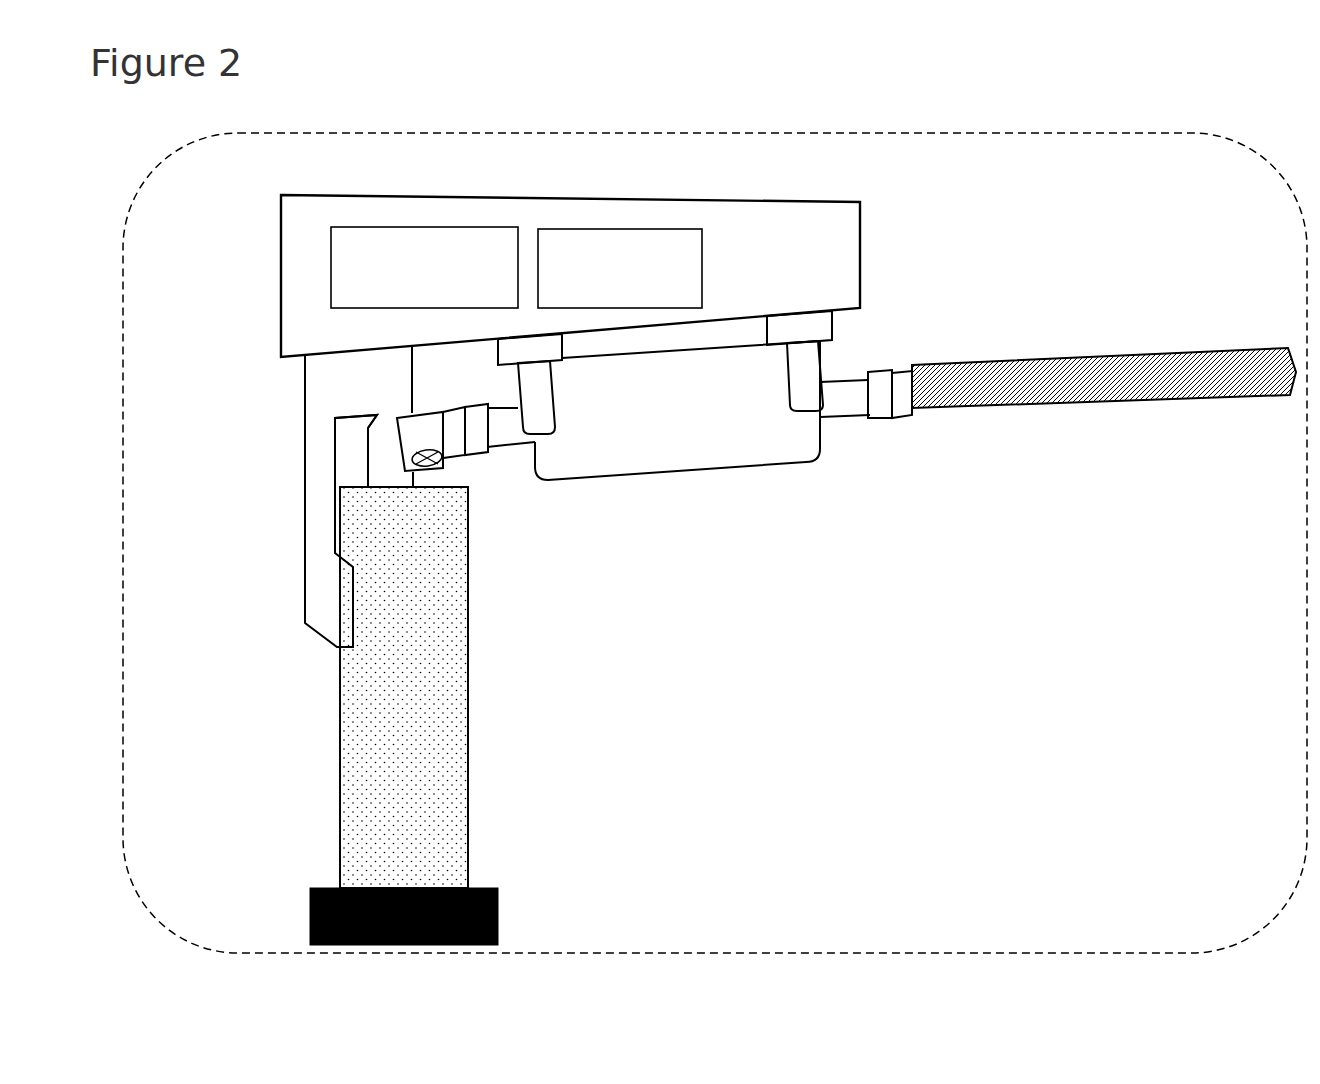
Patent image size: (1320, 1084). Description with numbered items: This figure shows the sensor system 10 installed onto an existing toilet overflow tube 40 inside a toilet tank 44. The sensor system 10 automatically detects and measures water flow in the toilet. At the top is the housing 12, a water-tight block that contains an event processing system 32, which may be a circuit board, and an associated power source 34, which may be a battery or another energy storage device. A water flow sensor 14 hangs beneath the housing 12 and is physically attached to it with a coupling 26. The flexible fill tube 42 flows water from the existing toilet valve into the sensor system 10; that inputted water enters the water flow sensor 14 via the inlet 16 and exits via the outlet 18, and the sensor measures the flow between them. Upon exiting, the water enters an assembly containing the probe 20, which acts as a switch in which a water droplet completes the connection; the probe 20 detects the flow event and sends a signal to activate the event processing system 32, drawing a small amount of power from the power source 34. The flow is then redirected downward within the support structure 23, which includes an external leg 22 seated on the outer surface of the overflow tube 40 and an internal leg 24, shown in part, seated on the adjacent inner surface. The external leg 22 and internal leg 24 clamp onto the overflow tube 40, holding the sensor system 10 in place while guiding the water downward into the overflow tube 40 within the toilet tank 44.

The sensor system 10 is at (988, 215).
The housing 12 is at (570, 276).
The water flow sensor 14 is at (655, 410).
The inlet 16 is at (843, 418).
The outlet 18 is at (493, 447).
The probe 20 is at (456, 474).
The external leg 22 is at (320, 600).
The support structure 23 is at (381, 379).
The internal leg 24 is at (377, 443).
The coupling 26 is at (808, 362).
The event processing system 32 is at (424, 267).
The power source 34 is at (620, 268).
The toilet overflow tube 40 is at (450, 700).
The flexible fill tube 42 is at (1122, 410).
The toilet tank 44 is at (715, 543).